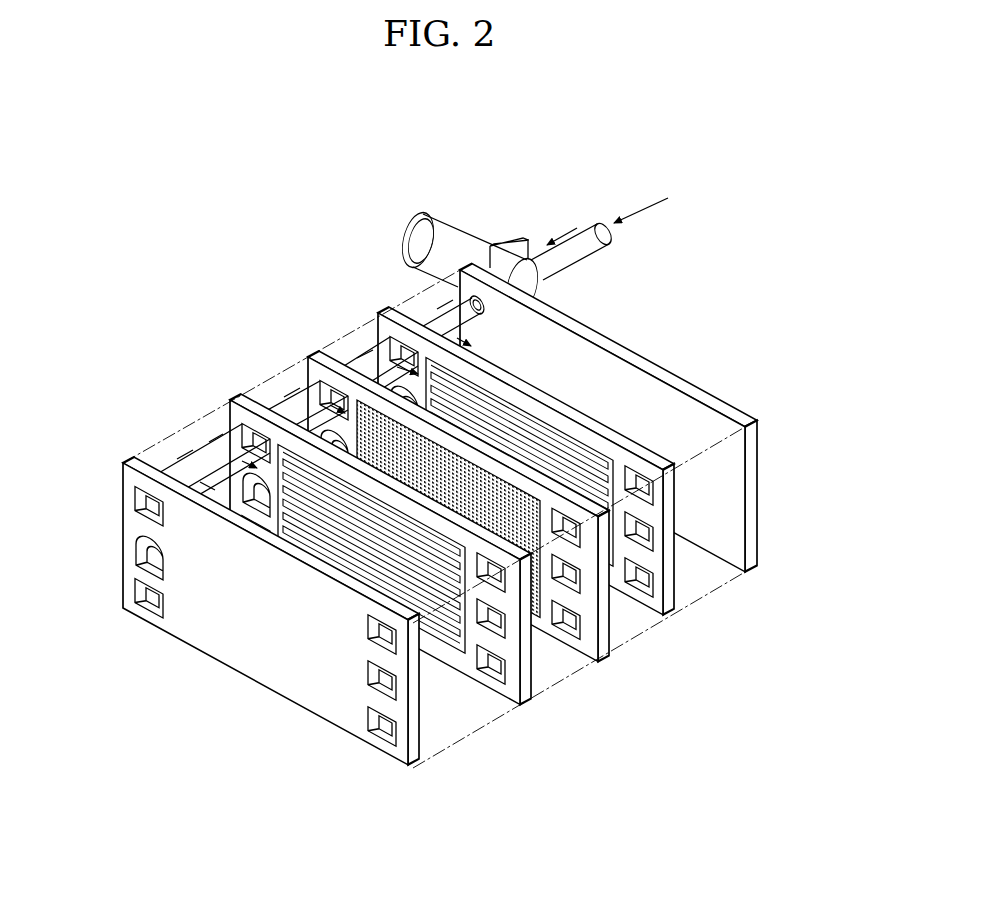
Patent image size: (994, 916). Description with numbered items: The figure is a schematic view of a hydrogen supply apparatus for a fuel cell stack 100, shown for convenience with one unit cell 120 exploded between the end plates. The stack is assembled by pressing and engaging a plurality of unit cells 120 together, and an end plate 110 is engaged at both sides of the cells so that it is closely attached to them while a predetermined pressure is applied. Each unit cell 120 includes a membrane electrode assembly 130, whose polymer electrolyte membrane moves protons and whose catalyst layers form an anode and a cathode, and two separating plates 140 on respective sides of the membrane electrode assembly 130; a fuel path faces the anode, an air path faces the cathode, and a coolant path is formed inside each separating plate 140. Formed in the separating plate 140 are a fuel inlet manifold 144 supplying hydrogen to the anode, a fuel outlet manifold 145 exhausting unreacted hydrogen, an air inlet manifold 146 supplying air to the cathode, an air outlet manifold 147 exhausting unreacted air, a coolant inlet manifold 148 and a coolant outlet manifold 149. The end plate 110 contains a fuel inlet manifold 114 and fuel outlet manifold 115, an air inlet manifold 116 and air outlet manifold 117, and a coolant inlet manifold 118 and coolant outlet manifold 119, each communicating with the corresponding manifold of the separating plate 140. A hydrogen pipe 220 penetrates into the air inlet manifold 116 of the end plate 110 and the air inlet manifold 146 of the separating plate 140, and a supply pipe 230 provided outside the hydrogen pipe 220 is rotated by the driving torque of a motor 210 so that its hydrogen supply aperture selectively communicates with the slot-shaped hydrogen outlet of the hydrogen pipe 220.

The fuel cell stack 100 is at (437, 510).
The end plate 110 is at (657, 375).
The fuel inlet manifold 114 is at (140, 500).
The fuel outlet manifold 115 is at (387, 715).
The air inlet manifold 116 is at (373, 627).
The air outlet manifold 117 is at (153, 590).
The coolant inlet manifold 118 is at (150, 548).
The coolant outlet manifold 119 is at (372, 682).
The unit cell 120 is at (374, 547).
The membrane electrode assembly 130 is at (458, 528).
The separating plate 140 is at (380, 316).
The fuel inlet manifold 144 is at (180, 447).
The fuel outlet manifold 145 is at (497, 657).
The air inlet manifold 146 is at (560, 612).
The air outlet manifold 147 is at (250, 490).
The coolant inlet manifold 148 is at (238, 427).
The coolant outlet manifold 149 is at (503, 613).
The motor 210 is at (477, 243).
The hydrogen pipe 220 is at (392, 268).
The supply pipe 230 is at (433, 322).